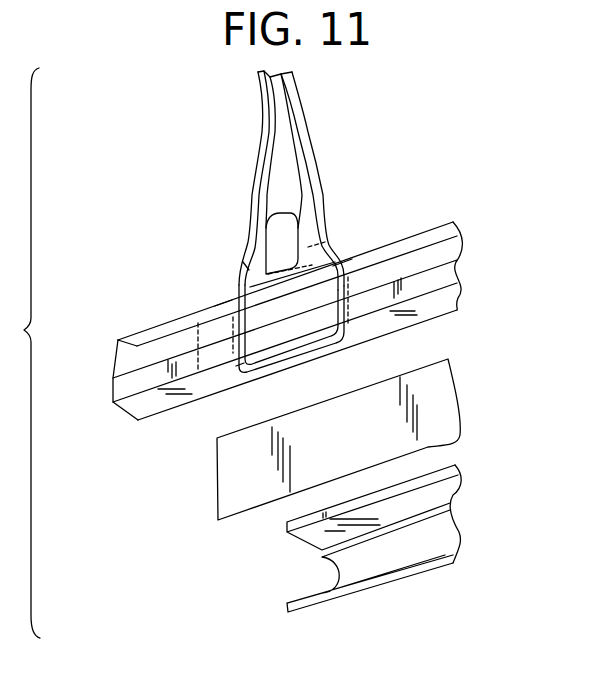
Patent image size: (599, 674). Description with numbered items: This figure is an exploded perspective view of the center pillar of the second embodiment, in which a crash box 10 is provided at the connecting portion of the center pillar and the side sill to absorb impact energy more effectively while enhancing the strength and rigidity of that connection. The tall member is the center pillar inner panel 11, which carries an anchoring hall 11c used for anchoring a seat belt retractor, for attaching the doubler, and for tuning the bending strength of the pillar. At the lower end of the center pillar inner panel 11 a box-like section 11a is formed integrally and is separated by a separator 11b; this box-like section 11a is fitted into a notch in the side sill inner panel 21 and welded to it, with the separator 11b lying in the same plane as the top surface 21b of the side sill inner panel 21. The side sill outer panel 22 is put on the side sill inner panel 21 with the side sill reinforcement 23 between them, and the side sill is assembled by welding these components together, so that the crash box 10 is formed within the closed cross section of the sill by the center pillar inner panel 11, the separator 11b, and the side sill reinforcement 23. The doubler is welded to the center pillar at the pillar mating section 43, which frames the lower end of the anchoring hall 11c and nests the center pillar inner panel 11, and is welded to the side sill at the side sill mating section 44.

The crash box 10 is at (233, 377).
The center pillar inner panel 11 is at (302, 157).
The box-like section 11a is at (313, 343).
The separator 11b is at (287, 283).
The anchoring hall 11c is at (288, 230).
The side sill inner panel 21 is at (113, 394).
The top surface 21b is at (133, 334).
The side sill outer panel 22 is at (370, 570).
The side sill reinforcement 23 is at (215, 485).
The pillar mating section 43 is at (250, 284).
The side sill mating section 44 is at (222, 303).